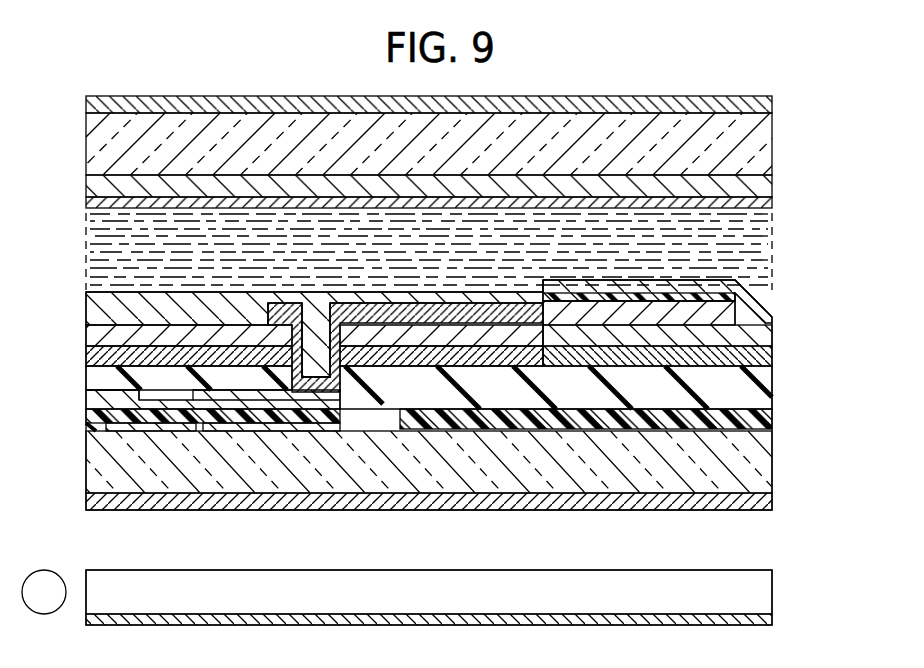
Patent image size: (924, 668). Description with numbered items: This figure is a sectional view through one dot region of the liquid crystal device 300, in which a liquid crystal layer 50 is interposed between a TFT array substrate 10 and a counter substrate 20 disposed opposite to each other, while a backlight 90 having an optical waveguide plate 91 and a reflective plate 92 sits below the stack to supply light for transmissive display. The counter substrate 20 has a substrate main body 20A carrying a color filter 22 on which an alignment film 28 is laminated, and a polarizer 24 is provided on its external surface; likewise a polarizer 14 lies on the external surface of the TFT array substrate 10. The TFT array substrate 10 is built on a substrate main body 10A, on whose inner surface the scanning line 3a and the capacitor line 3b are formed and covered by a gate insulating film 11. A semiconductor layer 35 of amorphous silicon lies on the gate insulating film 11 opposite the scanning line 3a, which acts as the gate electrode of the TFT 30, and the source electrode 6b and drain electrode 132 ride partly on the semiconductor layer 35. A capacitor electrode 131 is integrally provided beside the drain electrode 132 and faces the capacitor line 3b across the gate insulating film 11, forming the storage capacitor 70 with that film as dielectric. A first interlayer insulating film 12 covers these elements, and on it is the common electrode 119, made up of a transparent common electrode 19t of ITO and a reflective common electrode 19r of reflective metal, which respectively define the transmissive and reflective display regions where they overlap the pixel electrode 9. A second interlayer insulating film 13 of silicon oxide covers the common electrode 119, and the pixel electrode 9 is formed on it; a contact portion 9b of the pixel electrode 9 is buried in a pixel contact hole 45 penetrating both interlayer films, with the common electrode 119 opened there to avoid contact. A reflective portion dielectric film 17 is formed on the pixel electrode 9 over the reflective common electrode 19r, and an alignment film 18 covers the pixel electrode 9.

The liquid crystal device 300 is at (705, 73).
The counter substrate 20 is at (72, 96).
The polarizer 24 is at (772, 100).
The substrate main body 20A is at (772, 128).
The color filter 22 is at (772, 183).
The alignment film 28 is at (772, 203).
The liquid crystal layer 50 is at (772, 235).
The TFT array substrate 10 is at (72, 290).
The alignment film 18 is at (772, 300).
The reflective common electrode 19r is at (706, 352).
The transparent common electrode 19t is at (203, 348).
The pixel electrode 9 is at (398, 310).
The contact portion 9b is at (290, 345).
The pixel contact hole 45 is at (316, 330).
The reflective portion dielectric film 17 is at (628, 296).
The second interlayer insulating film 13 is at (772, 333).
The common electrode 119 is at (772, 358).
The first interlayer insulating film 12 is at (772, 390).
The storage capacitor 70 is at (358, 388).
The source electrode 6b is at (133, 393).
The gate insulating film 11 is at (772, 425).
The substrate main body 10A is at (772, 463).
The polarizer 14 is at (772, 500).
The TFT 30 is at (147, 437).
The semiconductor layer 35 is at (157, 418).
The scanning line 3a is at (203, 402).
The drain electrode 132 is at (258, 405).
The capacitor line 3b is at (318, 405).
The capacitor electrode 131 is at (340, 400).
The backlight 90 is at (454, 600).
The optical waveguide plate 91 is at (772, 585).
The reflective plate 92 is at (772, 620).